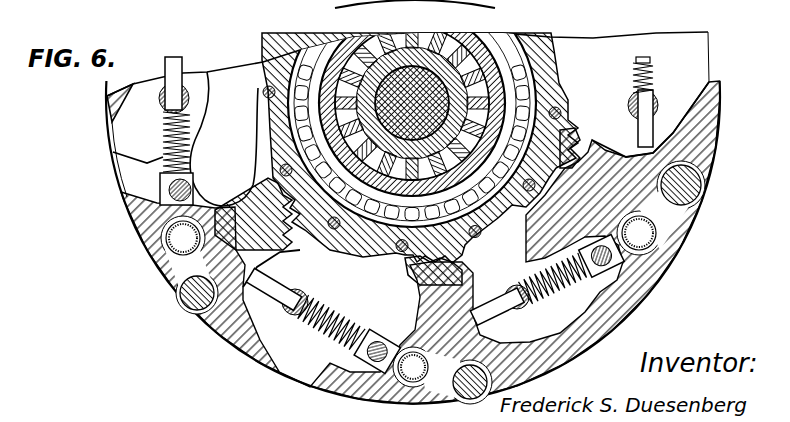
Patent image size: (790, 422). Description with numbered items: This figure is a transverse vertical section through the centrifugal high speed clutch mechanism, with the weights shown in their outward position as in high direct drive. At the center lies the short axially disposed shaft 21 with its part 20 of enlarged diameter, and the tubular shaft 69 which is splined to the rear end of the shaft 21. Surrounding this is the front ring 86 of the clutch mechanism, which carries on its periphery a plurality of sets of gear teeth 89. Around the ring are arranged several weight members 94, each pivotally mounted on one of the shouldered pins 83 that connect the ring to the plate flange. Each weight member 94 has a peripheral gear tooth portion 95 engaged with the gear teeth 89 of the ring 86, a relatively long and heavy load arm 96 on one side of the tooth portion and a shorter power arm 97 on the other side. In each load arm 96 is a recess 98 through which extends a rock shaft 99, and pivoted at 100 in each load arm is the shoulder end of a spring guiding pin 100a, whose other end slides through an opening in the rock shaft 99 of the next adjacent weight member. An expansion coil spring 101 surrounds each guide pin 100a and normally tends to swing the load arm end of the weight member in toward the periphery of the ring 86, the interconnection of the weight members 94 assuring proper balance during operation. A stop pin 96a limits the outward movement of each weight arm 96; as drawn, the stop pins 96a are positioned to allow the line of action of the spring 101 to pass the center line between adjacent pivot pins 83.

The tubular shaft 69 is at (368, 52).
The shaft part of enlarged diameter 20 is at (425, 27).
The short axially disposed shaft 21 is at (418, 75).
The front ring 86 is at (556, 53).
The gear teeth 89 is at (569, 133).
The peripheral gear tooth portion 95 is at (288, 235).
The weight member 94 is at (247, 202).
The load arm 96 is at (104, 108).
The stop pin 96a is at (190, 305).
The power arm 97 is at (151, 206).
The recess 98 is at (300, 367).
The rock shaft 99 is at (190, 98).
The pivot 100 is at (170, 188).
The spring guiding pin 100a is at (178, 60).
The expansion coil spring 101 is at (190, 145).
The shouldered pin 83 is at (166, 240).